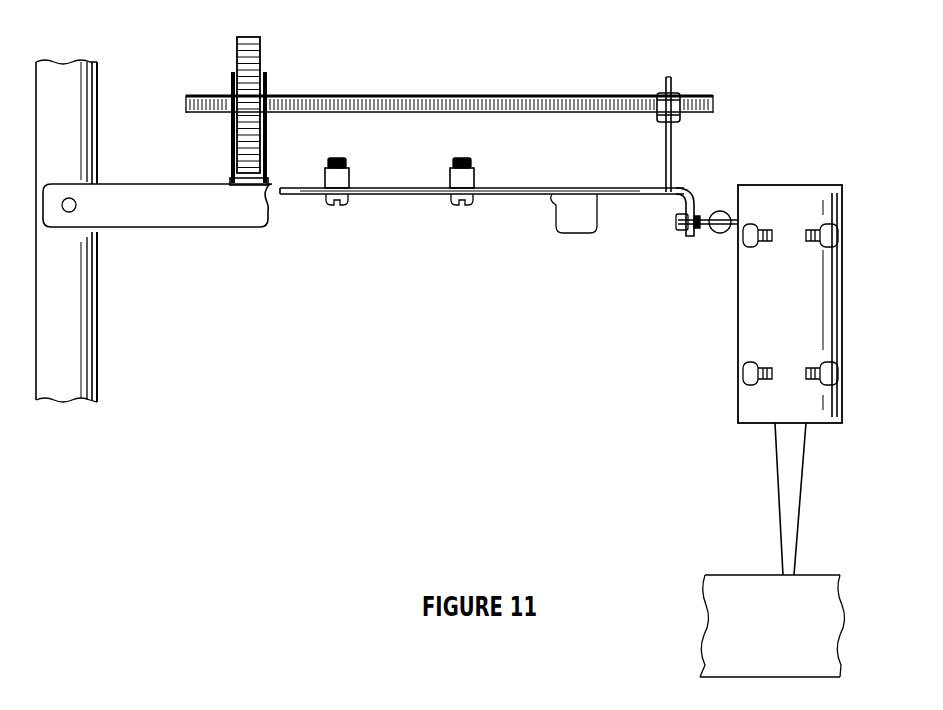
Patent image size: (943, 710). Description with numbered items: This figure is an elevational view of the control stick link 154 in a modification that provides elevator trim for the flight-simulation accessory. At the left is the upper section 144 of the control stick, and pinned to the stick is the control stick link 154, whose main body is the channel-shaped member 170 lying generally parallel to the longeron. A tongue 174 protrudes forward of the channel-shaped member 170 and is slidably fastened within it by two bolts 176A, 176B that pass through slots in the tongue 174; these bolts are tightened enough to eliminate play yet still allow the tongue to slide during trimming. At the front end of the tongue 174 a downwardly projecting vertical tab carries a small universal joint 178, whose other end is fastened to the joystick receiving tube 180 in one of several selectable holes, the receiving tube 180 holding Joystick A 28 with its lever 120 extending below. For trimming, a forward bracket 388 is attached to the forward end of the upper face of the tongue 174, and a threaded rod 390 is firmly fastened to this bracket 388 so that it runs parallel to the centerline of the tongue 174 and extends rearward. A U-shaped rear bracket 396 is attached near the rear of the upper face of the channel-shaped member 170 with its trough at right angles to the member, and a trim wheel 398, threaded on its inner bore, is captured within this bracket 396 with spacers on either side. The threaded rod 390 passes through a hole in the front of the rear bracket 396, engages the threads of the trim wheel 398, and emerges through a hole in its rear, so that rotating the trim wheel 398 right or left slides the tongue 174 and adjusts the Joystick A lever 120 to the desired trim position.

The Joystick A 28 is at (734, 553).
The Joystick A lever 120 is at (777, 487).
The upper section of control stick 144 is at (97, 278).
The control stick link 154 is at (411, 168).
The channel-shaped member 170 is at (238, 230).
The tongue 174 is at (683, 190).
The bolt 176A is at (345, 198).
The bolt 176B is at (471, 198).
The universal joint 178 is at (722, 236).
The joystick receiving tube 180 is at (738, 340).
The forward bracket 388 is at (664, 154).
The threaded rod 390 is at (420, 93).
The U-shaped rear bracket 396 is at (230, 160).
The trim wheel 398 is at (237, 53).